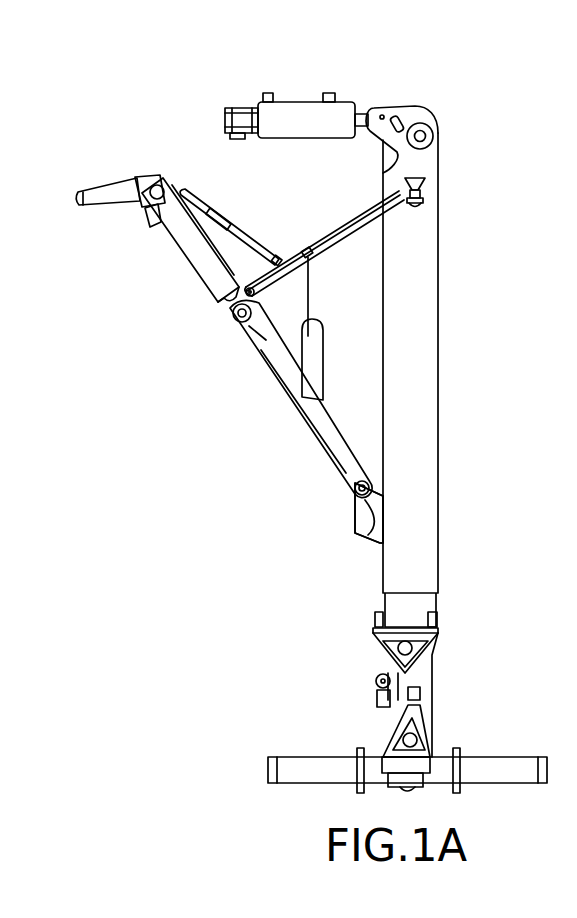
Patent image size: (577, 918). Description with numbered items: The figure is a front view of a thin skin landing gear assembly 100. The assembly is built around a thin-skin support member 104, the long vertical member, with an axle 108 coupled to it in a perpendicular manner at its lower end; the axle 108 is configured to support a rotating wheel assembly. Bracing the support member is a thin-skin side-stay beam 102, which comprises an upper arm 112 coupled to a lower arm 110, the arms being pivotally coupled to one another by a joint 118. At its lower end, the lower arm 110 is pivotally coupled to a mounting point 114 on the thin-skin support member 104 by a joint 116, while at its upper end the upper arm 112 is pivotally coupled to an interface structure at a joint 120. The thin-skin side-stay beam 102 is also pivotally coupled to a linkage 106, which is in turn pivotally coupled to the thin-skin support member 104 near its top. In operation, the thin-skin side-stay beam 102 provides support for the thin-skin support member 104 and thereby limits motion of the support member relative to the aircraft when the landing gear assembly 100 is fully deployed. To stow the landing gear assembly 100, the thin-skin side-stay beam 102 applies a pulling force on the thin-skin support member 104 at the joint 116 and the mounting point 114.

The landing gear assembly 100 is at (106, 103).
The thin-skin side-stay beam 102 is at (190, 357).
The thin-skin support member 104 is at (438, 318).
The linkage 106 is at (347, 238).
The axle 108 is at (326, 767).
The lower arm 110 is at (292, 393).
The upper arm 112 is at (188, 245).
The mounting point 114 is at (380, 507).
The joint 116 is at (364, 470).
The joint 118 is at (253, 307).
The joint 120 is at (159, 185).